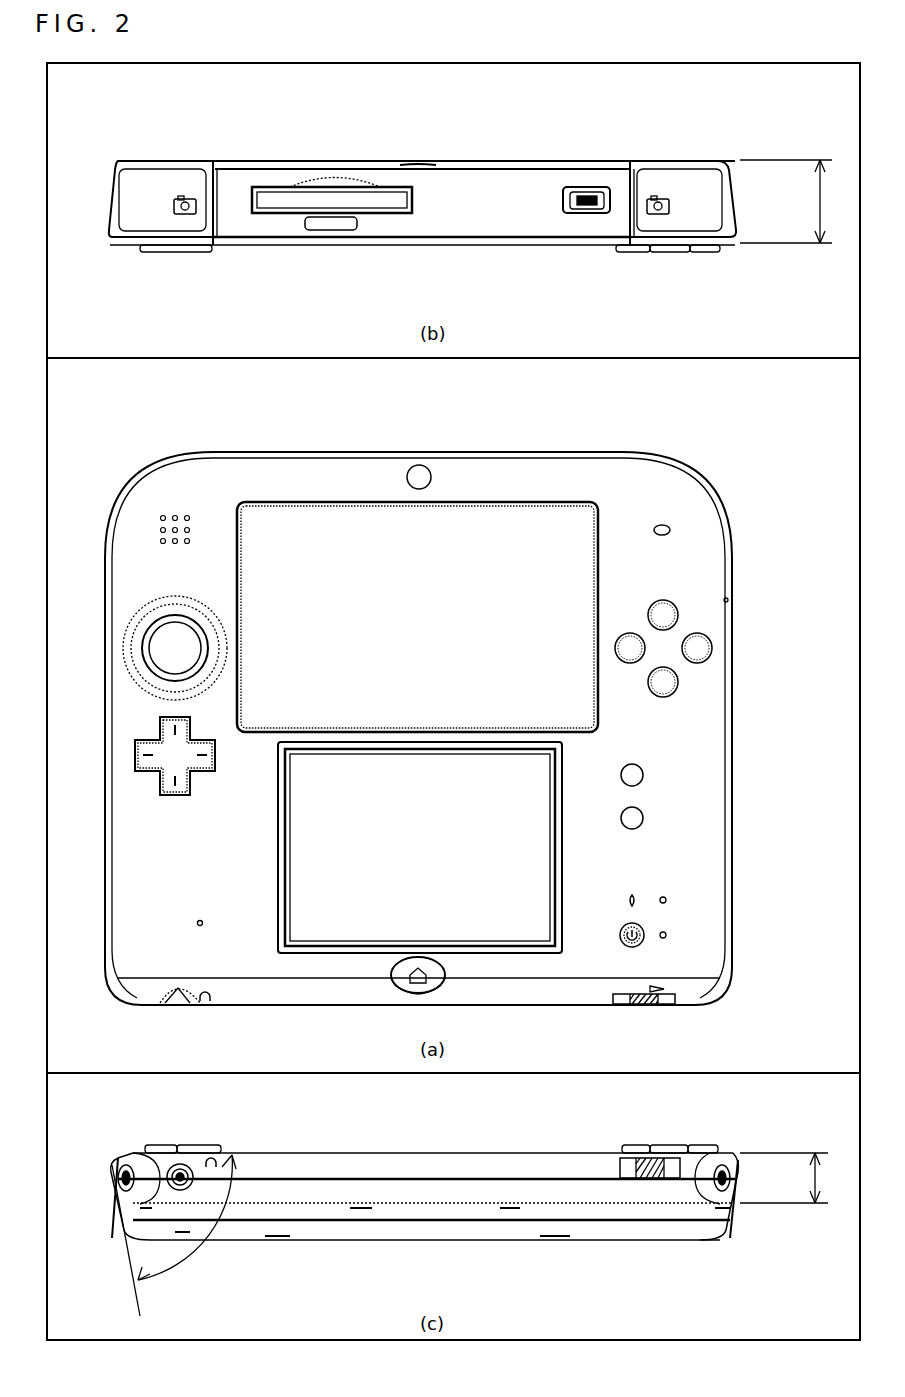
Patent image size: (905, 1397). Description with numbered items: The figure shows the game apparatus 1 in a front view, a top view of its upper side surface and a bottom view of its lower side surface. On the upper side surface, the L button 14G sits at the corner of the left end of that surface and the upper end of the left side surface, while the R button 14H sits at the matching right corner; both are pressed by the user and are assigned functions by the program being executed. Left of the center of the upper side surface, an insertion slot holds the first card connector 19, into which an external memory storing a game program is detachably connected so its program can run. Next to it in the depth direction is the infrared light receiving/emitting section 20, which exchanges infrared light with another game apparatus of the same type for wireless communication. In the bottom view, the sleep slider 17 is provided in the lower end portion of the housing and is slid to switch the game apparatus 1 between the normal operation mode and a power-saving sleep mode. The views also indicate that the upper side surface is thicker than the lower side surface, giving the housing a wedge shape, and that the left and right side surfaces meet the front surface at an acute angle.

The game apparatus 1 is at (593, 130).
The L button 14G is at (126, 178).
The R button 14H is at (672, 180).
The first card connector 19 is at (342, 198).
The infrared light receiving/emitting section 20 is at (318, 232).
The sleep slider 17 is at (628, 1182).